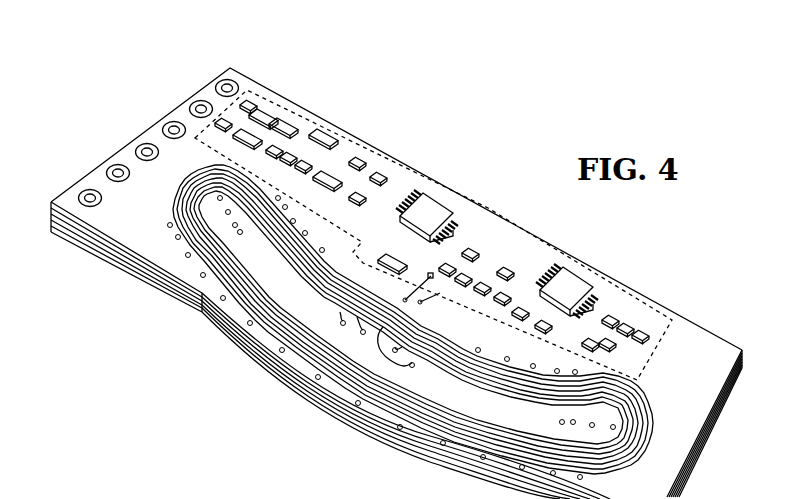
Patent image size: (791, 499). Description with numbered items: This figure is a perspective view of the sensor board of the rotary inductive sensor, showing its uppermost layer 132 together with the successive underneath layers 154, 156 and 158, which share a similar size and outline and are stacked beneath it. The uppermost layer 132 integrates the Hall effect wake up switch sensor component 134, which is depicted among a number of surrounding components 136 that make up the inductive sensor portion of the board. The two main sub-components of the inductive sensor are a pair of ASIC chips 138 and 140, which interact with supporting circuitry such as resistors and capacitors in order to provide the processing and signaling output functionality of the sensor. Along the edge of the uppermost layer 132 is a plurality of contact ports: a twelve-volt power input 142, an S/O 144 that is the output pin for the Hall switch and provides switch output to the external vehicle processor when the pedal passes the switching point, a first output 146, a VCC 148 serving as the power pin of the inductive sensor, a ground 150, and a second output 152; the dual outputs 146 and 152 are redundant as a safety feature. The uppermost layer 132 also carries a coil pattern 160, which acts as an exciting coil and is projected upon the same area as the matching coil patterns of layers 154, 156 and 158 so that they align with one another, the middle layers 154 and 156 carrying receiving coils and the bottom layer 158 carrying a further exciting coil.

The uppermost layer 132 is at (117, 222).
The Hall effect wake up switch sensor component 134 is at (312, 200).
The surrounding components 136 is at (488, 208).
The ASIC chip 138 is at (420, 213).
The ASIC chip 140 is at (563, 290).
The 12V power input 142 is at (227, 79).
The S/O 144 is at (201, 100).
The Output 1 146 is at (174, 121).
The VCC 148 is at (147, 143).
The Ground (GND) 150 is at (117, 164).
The Output 2 152 is at (89, 189).
The layer 154 is at (142, 267).
The layer 156 is at (158, 282).
The layer 158 is at (182, 300).
The coil pattern 160 is at (644, 433).